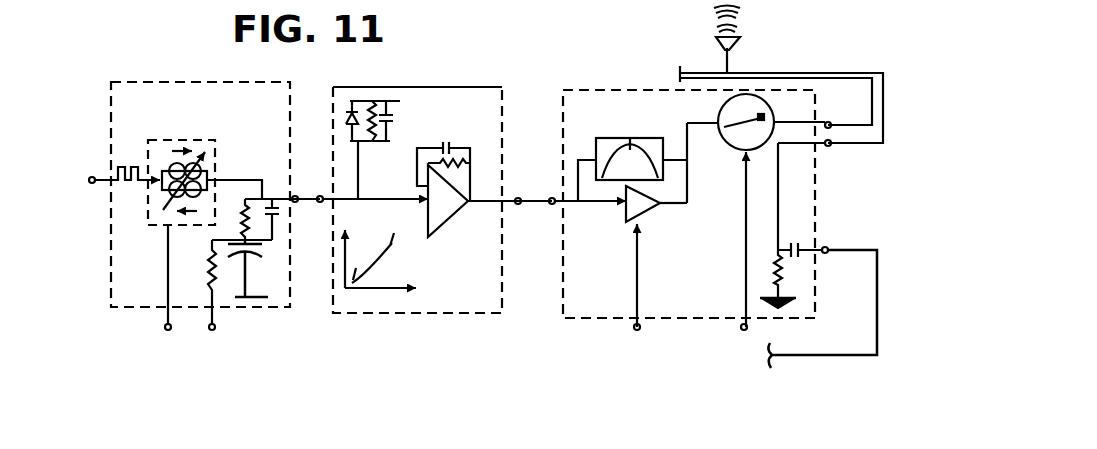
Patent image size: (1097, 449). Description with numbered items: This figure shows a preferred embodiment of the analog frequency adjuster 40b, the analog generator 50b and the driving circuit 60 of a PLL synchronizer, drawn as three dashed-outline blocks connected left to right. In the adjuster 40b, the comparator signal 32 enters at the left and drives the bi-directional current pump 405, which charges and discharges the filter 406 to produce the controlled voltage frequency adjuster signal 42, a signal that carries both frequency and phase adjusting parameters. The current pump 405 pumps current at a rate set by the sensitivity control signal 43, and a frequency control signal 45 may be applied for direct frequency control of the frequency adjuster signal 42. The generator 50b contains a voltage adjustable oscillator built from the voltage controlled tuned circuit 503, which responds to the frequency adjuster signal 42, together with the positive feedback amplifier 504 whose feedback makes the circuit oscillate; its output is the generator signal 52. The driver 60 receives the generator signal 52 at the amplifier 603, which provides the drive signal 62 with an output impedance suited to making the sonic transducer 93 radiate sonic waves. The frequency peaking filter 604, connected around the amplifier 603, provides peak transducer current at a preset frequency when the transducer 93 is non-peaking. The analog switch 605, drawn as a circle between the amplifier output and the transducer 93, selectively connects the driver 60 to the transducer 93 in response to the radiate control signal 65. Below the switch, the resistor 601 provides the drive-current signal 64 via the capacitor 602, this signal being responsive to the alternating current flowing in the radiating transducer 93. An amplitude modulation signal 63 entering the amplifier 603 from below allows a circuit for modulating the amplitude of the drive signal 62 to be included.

The analog frequency adjuster 40b is at (170, 80).
The comparator signal 32 is at (92, 177).
The bi-directional current pump 405 is at (183, 143).
The filter 406 is at (268, 182).
The frequency adjuster signal 42 is at (298, 204).
The sensitivity control signal 43 is at (164, 327).
The frequency control signal 45 is at (223, 336).
The analog generator 50b is at (440, 82).
The generator signal 52 is at (525, 195).
The voltage controlled tuned circuit 503 is at (382, 129).
The positive feedback amplifier 504 is at (442, 210).
The driving circuit 60 is at (573, 86).
The frequency peaking filter 604 is at (638, 139).
The analog switch 605 is at (745, 95).
The sonic transducer 93 is at (735, 36).
The drive signal 62 is at (830, 133).
The drive-current signal 64 is at (845, 239).
The amplifier 603 is at (655, 210).
The capacitor 602 is at (788, 243).
The resistor 601 is at (770, 268).
The amplitude modulation signal 63 is at (633, 326).
The radiate control signal 65 is at (739, 324).